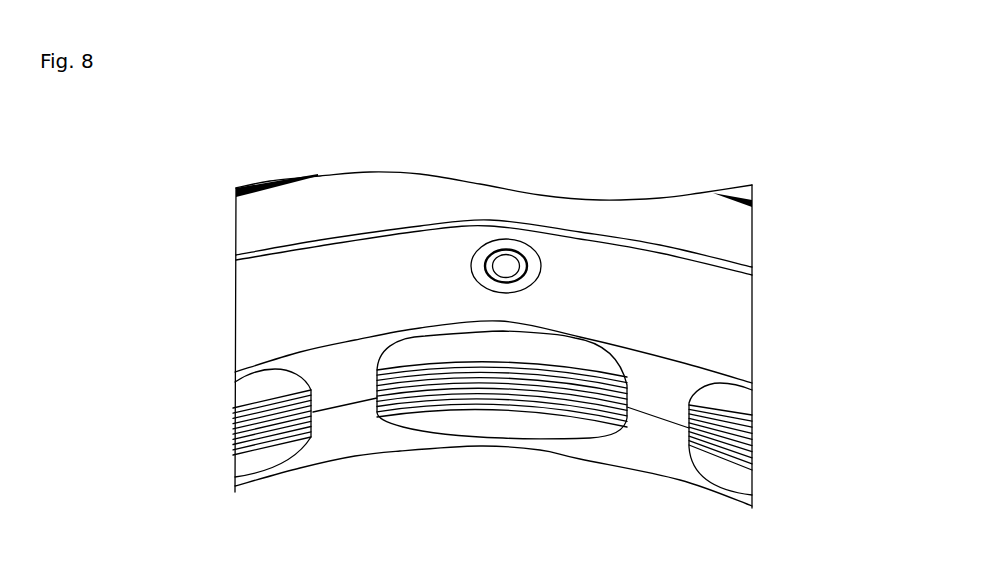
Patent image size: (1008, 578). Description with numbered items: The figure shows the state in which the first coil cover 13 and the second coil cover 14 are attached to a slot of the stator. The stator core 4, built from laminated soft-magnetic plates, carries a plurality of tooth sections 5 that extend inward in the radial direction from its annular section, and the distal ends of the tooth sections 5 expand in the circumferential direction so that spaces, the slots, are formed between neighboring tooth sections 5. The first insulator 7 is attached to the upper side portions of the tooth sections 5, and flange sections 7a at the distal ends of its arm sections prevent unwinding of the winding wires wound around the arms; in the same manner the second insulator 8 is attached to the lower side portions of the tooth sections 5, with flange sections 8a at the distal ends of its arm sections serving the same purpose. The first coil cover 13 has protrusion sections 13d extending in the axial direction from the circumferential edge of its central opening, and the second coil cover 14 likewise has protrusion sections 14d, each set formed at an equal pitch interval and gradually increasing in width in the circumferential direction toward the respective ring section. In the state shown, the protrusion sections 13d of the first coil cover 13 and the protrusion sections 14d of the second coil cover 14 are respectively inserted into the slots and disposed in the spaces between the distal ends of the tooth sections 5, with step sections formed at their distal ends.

The stator core 4 is at (492, 434).
The tooth sections 5 is at (236, 430).
The first insulator 7 is at (493, 256).
The flange sections 7a is at (450, 352).
The second insulator 8 is at (493, 427).
The flange sections 8a is at (548, 427).
The first coil cover 13 is at (494, 253).
The protrusion sections 13d is at (655, 378).
The second coil cover 14 is at (493, 489).
The protrusion sections 14d is at (650, 455).